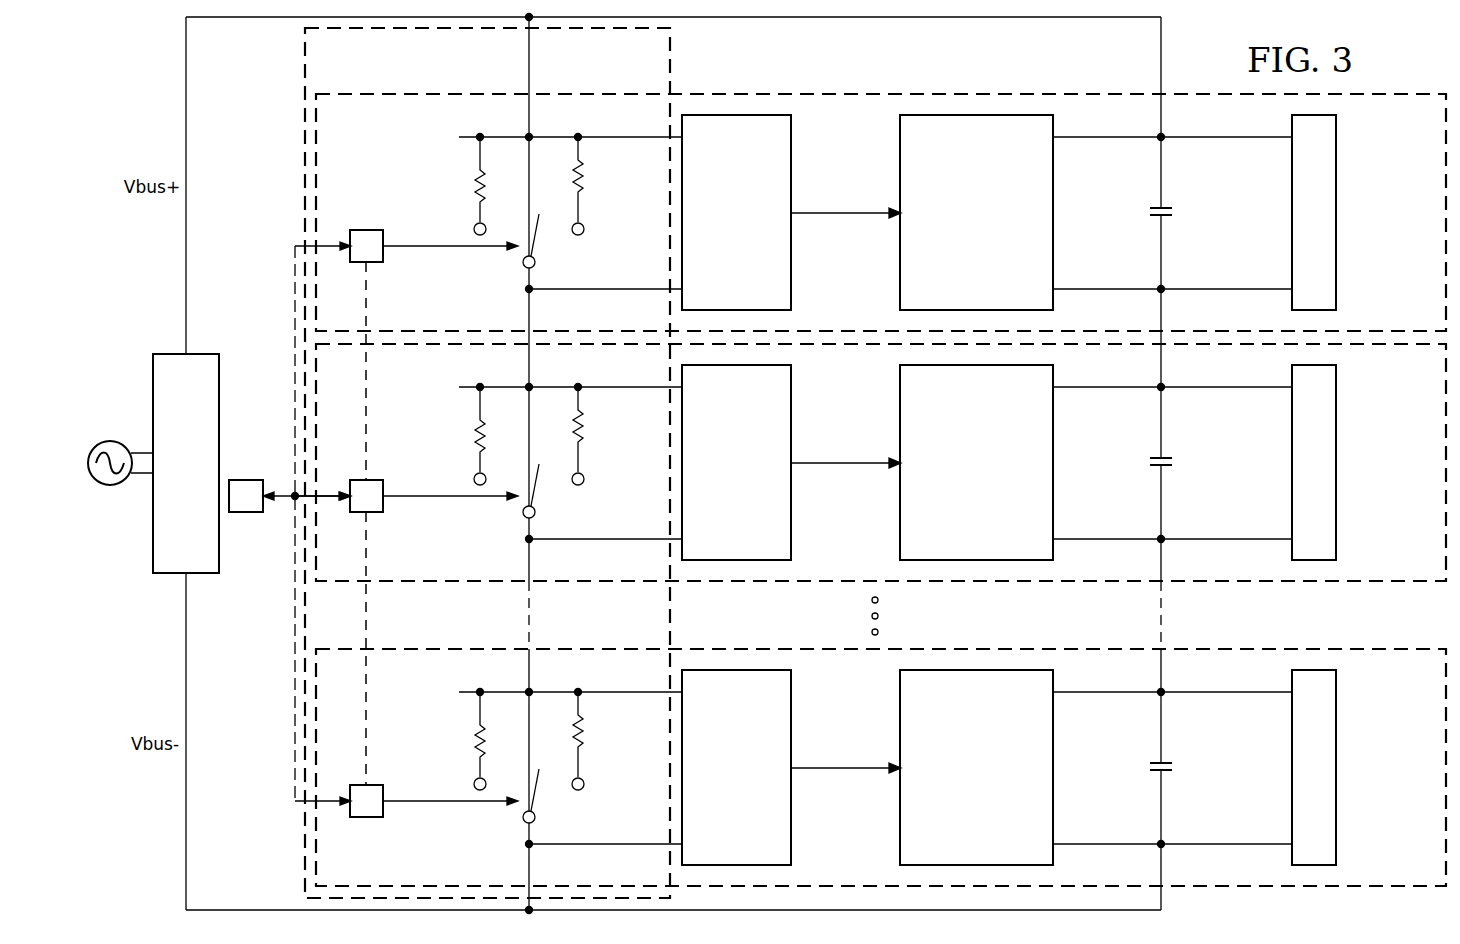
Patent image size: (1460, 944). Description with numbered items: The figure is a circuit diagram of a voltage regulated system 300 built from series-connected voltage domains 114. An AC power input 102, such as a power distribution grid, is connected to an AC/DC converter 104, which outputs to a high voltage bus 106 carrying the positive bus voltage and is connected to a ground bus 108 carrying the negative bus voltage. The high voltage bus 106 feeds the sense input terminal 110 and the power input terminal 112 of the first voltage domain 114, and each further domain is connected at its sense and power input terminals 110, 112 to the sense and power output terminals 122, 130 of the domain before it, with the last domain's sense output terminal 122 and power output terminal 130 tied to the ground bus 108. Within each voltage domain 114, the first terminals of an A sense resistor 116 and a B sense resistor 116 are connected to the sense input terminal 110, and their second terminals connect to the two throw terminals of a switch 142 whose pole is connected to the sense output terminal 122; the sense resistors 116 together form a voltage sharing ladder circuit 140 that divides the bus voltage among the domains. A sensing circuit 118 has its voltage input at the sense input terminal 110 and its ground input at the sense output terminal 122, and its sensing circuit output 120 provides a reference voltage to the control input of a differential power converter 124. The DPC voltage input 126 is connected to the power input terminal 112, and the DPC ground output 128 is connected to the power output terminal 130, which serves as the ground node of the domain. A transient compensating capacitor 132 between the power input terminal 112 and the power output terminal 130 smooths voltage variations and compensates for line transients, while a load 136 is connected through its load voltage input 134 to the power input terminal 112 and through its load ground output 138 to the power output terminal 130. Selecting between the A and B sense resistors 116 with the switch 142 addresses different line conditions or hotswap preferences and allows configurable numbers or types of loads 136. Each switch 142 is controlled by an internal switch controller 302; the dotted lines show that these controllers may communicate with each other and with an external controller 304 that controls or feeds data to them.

The voltage regulated system 300 is at (158, 262).
The alternating current (AC) power input 102 is at (112, 485).
The AC/DC converter 104 is at (165, 574).
The high voltage bus 106 is at (245, 18).
The ground bus 108 is at (245, 908).
The voltage sharing ladder circuit 140 is at (300, 204).
The internal switch controller 302 is at (382, 238).
The external controller 304 is at (256, 512).
The sense input terminal 110 is at (536, 136).
The sense resistor 116 is at (610, 212).
The switch 142 is at (536, 237).
The sense output terminal 122 is at (524, 290).
The sensing circuit 118 is at (792, 160).
The sensing circuit output 120 is at (844, 216).
The differential power converter 124 is at (900, 300).
The DPC voltage input 126 is at (1108, 140).
The DPC ground output 128 is at (1106, 288).
The power output terminal 130 is at (1155, 292).
The power input terminal 112 is at (1166, 134).
The transient compensating capacitor 132 is at (1174, 212).
The load voltage input 134 is at (1226, 140).
The load ground output 138 is at (1220, 288).
The load 136 is at (1338, 128).
The voltage domain 114 is at (1415, 259).